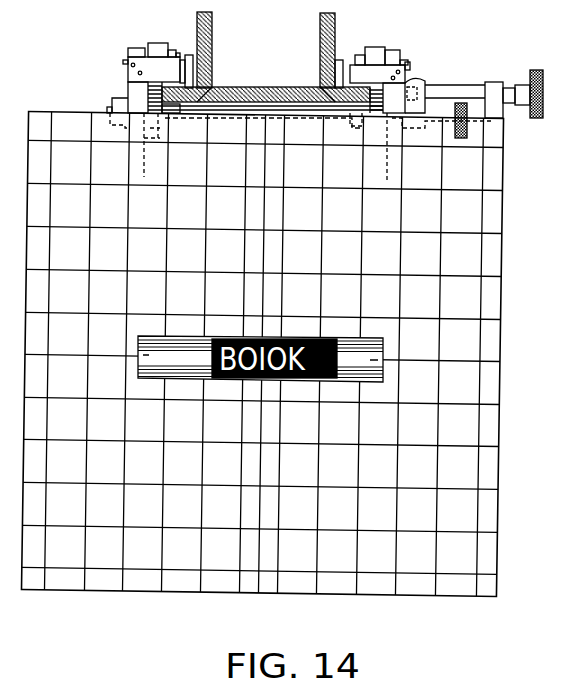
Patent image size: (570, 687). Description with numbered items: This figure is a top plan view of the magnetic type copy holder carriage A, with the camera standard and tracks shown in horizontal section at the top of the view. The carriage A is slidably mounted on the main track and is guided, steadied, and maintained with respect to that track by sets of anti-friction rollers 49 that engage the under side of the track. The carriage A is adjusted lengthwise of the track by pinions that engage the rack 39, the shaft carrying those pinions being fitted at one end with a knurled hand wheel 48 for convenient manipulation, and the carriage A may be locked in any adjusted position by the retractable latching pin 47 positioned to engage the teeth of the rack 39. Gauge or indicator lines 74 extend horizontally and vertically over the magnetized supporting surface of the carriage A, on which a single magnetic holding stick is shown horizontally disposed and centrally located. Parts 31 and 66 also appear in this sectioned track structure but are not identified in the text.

The frame rail 31 is at (210, 45).
The rack 39 is at (155, 85).
The anti-friction rollers 49 is at (158, 48).
The spacer plate 66 is at (208, 53).
The retractable latching pin 47 is at (461, 96).
The knurled hand wheel 48 is at (469, 109).
The gauge or indicator lines 74 is at (488, 237).
The magnetic type copy holder carriage A is at (424, 82).